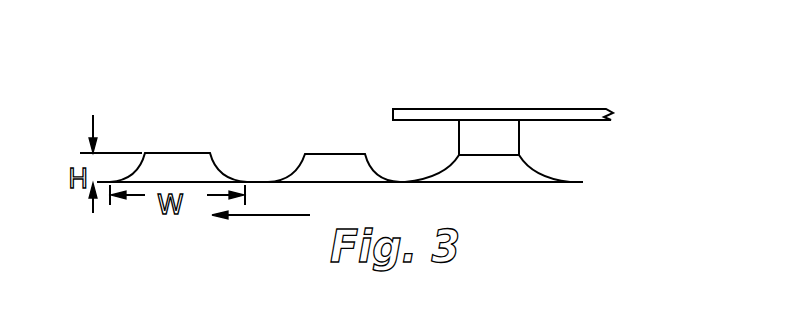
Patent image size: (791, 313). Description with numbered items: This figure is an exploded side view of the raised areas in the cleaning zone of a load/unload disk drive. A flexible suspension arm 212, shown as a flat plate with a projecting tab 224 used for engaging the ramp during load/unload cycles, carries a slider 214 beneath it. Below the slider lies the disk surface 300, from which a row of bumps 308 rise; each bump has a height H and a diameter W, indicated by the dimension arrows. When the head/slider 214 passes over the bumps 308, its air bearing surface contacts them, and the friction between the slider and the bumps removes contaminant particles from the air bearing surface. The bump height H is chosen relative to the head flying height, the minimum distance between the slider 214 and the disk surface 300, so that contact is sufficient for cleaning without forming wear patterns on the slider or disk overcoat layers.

The flexible suspension arm 212 is at (542, 108).
The projecting tab 224 is at (413, 108).
The slider 214 is at (519, 138).
The disk surface 300 is at (558, 183).
The bumps 308 is at (255, 134).